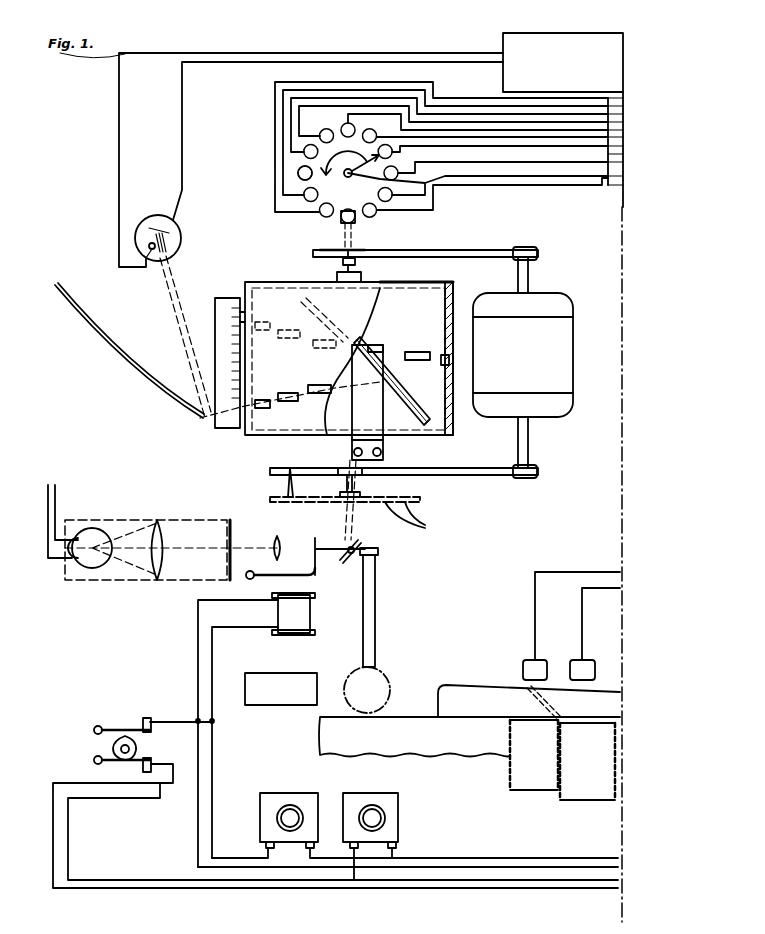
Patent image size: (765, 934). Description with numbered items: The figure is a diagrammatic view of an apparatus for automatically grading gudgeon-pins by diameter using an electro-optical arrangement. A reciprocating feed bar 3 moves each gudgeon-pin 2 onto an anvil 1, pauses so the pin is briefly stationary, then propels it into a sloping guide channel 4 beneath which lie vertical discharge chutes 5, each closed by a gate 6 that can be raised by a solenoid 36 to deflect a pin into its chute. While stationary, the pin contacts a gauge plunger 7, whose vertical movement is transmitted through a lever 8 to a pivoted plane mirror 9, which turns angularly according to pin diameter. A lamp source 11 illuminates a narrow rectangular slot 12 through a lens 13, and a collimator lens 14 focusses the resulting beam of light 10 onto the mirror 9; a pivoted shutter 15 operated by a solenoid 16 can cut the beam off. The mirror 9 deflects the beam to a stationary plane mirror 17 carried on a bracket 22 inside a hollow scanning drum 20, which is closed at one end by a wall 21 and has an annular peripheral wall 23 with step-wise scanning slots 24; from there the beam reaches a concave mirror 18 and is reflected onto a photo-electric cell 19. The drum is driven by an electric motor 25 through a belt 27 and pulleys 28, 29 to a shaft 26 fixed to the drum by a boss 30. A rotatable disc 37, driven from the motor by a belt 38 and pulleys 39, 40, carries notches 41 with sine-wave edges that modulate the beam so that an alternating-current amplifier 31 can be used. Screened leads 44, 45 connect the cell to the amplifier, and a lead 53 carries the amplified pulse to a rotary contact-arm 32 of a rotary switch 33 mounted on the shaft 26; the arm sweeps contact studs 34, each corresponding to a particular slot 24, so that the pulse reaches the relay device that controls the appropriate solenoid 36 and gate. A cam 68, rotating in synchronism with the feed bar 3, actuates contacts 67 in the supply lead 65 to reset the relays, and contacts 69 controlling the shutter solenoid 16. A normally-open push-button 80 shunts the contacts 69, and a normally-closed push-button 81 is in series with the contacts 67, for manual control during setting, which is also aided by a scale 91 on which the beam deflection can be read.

The anvil 1 is at (396, 712).
The gudgeon-pin 2 is at (382, 677).
The feed bar 3 is at (290, 700).
The guide channel 4 is at (450, 690).
The discharge chute 5 is at (540, 790).
The gate 6 is at (560, 708).
The gauge plunger 7 is at (375, 607).
The lever 8 is at (361, 546).
The pivoted plane mirror 9 is at (343, 556).
The beam of light 10 is at (322, 546).
The lamp source 11 is at (98, 530).
The slot 12 is at (235, 540).
The lens 13 is at (162, 522).
The collimator lens 14 is at (280, 538).
The pivoted shutter 15 is at (312, 564).
The solenoid 16 is at (300, 618).
The stationary plane mirror 17 is at (405, 407).
The concave mirror 18 is at (98, 336).
The photo-electric cell 19 is at (181, 238).
The scanning drum 20 is at (280, 278).
The wall 21 is at (450, 286).
The bracket 22 is at (351, 434).
The annular peripheral wall 23 is at (352, 300).
The scanning slot 24 is at (318, 348).
The electric motor 25 is at (556, 338).
The shaft 26 is at (333, 229).
The belt 27 is at (476, 250).
The pulley 28 is at (528, 248).
The pulley 29 is at (372, 250).
The boss 30 is at (361, 276).
The amplifier 31 is at (503, 80).
The rotary contact-arm 32 is at (350, 175).
The rotary switch 33 is at (290, 176).
The contact stud 34 is at (341, 130).
The solenoid 36 is at (523, 668).
The rotatable disc 37 is at (280, 490).
The belt 38 is at (458, 476).
The pulley 39 is at (524, 478).
The pulley 40 is at (338, 474).
The notch 41 is at (360, 490).
The screened lead 44 is at (184, 118).
The screened lead 45 is at (121, 118).
The lead 53 is at (522, 186).
The lead 65 is at (135, 880).
The contacts 67 is at (143, 764).
The cam 68 is at (137, 749).
The contacts 69 is at (145, 722).
The push-button 80 is at (290, 810).
The push-button 81 is at (372, 810).
The scale 91 is at (224, 302).